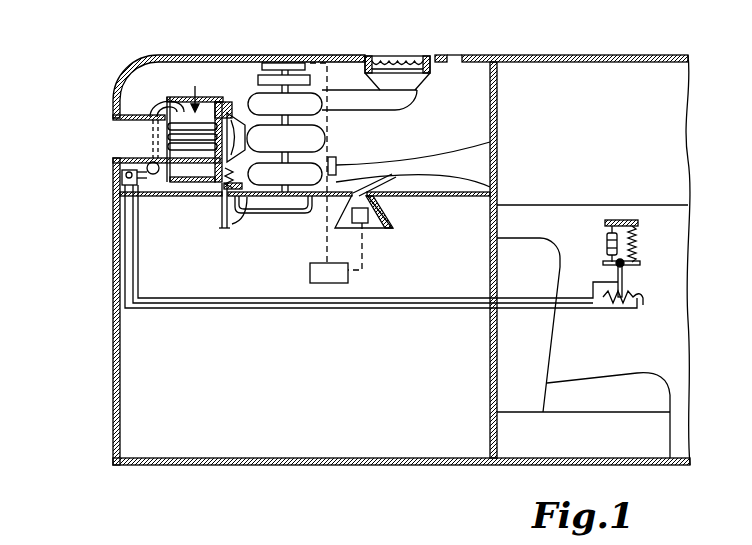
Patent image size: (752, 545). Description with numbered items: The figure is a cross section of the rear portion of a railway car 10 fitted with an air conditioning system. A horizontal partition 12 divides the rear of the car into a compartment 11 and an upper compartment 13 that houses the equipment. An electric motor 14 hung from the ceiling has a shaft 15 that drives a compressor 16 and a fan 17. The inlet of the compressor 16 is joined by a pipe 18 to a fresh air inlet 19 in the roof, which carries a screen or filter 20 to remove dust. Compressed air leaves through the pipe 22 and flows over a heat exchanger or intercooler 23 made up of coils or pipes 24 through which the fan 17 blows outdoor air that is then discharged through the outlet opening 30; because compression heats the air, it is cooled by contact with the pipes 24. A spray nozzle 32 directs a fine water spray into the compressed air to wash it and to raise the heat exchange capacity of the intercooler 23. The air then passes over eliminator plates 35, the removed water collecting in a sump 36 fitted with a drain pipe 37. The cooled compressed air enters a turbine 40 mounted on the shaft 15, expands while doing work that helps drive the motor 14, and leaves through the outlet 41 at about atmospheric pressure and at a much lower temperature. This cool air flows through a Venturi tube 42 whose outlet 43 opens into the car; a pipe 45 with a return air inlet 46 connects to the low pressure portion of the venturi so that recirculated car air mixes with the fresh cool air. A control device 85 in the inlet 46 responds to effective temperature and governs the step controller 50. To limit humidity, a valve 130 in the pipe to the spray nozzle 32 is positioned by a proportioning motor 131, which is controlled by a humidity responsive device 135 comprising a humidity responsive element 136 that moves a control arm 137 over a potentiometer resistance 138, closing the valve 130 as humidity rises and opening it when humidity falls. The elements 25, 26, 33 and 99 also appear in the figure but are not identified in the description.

The railway car 10 is at (110, 431).
The compartment 11 is at (297, 375).
The horizontal partition 12 is at (257, 196).
The compartment 13 is at (386, 138).
The electric motor 14 is at (258, 78).
The shaft 15 is at (323, 117).
The compressor 16 is at (285, 109).
The fan 17 is at (286, 144).
The pipe 18 is at (369, 101).
The fresh air inlet 19 is at (421, 57).
The screen or filter 20 is at (384, 58).
The pipe 22 is at (228, 100).
The heat exchanger or intercooler 23 is at (197, 90).
The coils or pipes 24 is at (190, 152).
The vent opening 25 is at (455, 57).
The fan 26 is at (237, 137).
The outlet opening 30 is at (118, 137).
The spray nozzle 32 is at (182, 96).
The expansion valve 33 is at (236, 179).
The eliminator plates 35 is at (226, 178).
The sump 36 is at (236, 223).
The drain pipe 37 is at (222, 206).
The turbine 40 is at (285, 177).
The outlet 41 is at (334, 166).
The Venturi tube 42 is at (368, 167).
The outlet 43 is at (413, 171).
The pipe 45 is at (385, 181).
The inlet 46 is at (391, 229).
The step controller 50 is at (329, 273).
The control device 85 is at (363, 228).
The drain line 99 is at (272, 220).
The valve 130 is at (158, 175).
The proportioning motor 131 is at (120, 187).
The humidity responsive device 135 is at (651, 255).
The humidity responsive element 136 is at (607, 241).
The control arm 137 is at (626, 289).
The potentiometer resistance 138 is at (639, 300).